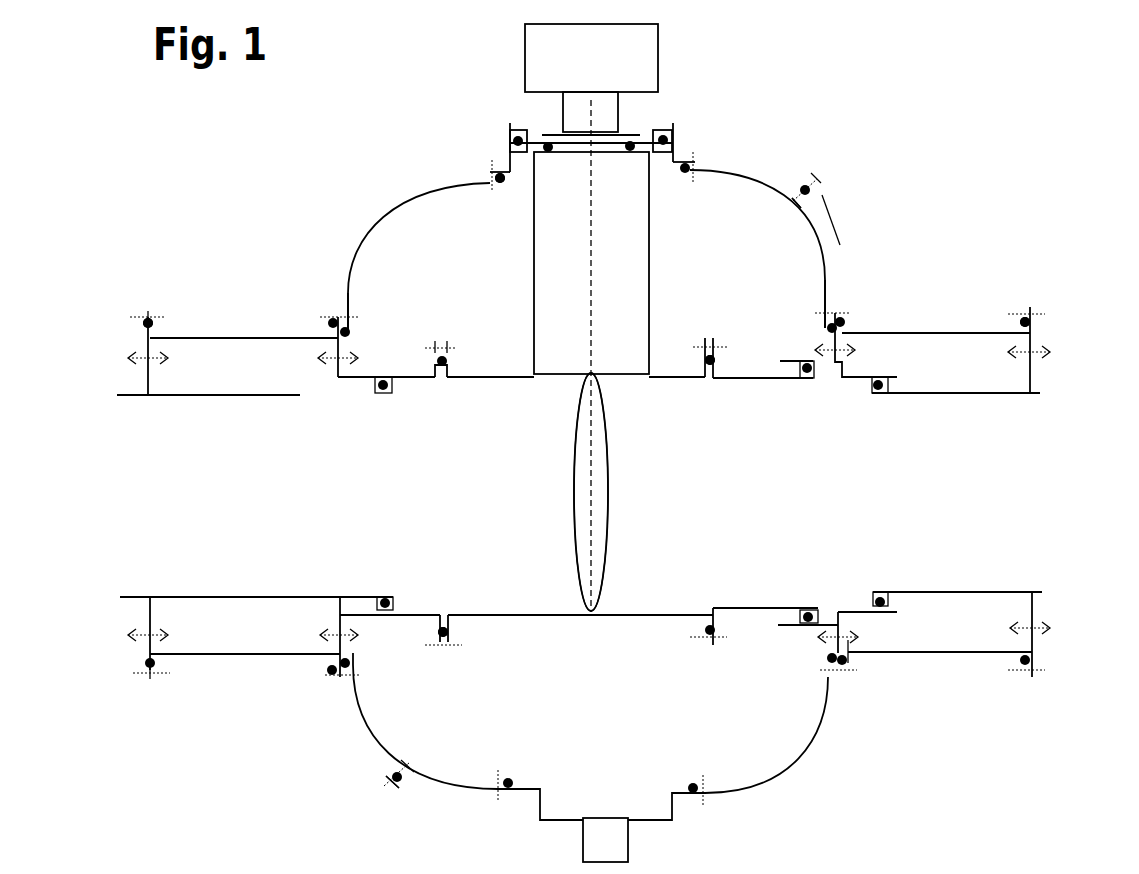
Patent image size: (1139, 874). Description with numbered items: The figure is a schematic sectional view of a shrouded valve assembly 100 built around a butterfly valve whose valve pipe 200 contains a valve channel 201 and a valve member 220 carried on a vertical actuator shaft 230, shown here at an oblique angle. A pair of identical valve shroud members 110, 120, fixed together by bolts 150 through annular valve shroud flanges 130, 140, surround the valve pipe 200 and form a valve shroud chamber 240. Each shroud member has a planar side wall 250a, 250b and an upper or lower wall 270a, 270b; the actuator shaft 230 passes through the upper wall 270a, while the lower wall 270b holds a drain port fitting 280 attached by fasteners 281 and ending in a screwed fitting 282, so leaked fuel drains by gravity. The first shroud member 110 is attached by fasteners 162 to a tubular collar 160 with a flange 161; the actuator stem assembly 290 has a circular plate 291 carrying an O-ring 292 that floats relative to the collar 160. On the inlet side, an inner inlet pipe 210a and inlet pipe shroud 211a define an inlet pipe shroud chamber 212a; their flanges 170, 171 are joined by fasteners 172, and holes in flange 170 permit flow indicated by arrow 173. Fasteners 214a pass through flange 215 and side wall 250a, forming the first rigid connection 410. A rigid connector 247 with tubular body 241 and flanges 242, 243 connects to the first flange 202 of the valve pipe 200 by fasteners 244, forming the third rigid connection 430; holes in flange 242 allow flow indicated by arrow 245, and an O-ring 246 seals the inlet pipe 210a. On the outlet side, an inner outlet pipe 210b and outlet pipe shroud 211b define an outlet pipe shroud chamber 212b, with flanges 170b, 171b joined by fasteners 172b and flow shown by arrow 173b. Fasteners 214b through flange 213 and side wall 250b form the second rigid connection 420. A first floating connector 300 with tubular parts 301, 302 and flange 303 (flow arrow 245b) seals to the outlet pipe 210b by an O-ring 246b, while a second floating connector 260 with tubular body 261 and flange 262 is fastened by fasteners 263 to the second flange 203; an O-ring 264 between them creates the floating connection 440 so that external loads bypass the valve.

The shrouded valve assembly 100 is at (898, 233).
The first valve shroud member 110 is at (378, 232).
The second valve shroud member 120 is at (808, 227).
The valve shroud flange 130 is at (813, 176).
The valve shroud flange 140 is at (822, 183).
The bolt 150 is at (843, 232).
The tubular collar 160 is at (673, 137).
The flange 161 is at (680, 167).
The fastener 162 is at (490, 162).
The flange 170 is at (147, 380).
The flange 170b is at (1032, 375).
The flange 171 is at (155, 333).
The flange 171b is at (1022, 332).
The fastener 172 is at (143, 311).
The fastener 172b is at (1037, 312).
The double-headed arrow 173 is at (140, 350).
The double-headed arrow 173b is at (1037, 630).
The valve pipe 200 is at (578, 496).
The valve channel 201 is at (618, 492).
The first flange 202 is at (452, 648).
The second flange 203 is at (705, 645).
The inner inlet pipe 210a is at (278, 595).
The inner outlet pipe 210b is at (945, 592).
The inlet pipe shroud 211a is at (242, 655).
The outlet pipe shroud 211b is at (930, 652).
The inlet pipe shroud chamber 212a is at (255, 496).
The outlet pipe shroud chamber 212b is at (942, 492).
The flange 213 is at (843, 330).
The fastener 214a is at (347, 315).
The fastener 214b is at (822, 313).
The flange 215 is at (333, 330).
The valve member 220 is at (608, 560).
The actuator shaft 230 is at (592, 323).
The valve shroud chamber 240 is at (549, 454).
The tubular body 241 is at (412, 378).
The flange 242 is at (338, 367).
The flange 243 is at (437, 623).
The fastener 244 is at (433, 647).
The double-headed arrow 245 is at (333, 645).
The double-headed arrow 245b is at (853, 348).
The O-ring 246 is at (386, 598).
The O-ring 246b is at (883, 392).
The rigid connector 247 is at (412, 597).
The planar side wall 250a is at (353, 303).
The planar side wall 250b is at (835, 300).
The second floating connector 260 is at (765, 393).
The tubular body 261 is at (742, 606).
The flange 262 is at (717, 370).
The fastener 263 is at (698, 343).
The O-ring 264 is at (808, 378).
The upper wall 270a is at (500, 190).
The lower wall 270b is at (517, 780).
The drain port fitting 280 is at (677, 813).
The fastener 281 is at (705, 800).
The screwed fitting 282 is at (617, 840).
The actuator stem assembly 290 is at (493, 96).
The circular plate 291 is at (640, 140).
The O-ring 292 is at (510, 142).
The first floating connector 300 is at (847, 385).
The tubular part 301 is at (795, 627).
The tubular part 302 is at (857, 612).
The flange 303 is at (850, 645).
The first rigid connection 410 is at (307, 302).
The second rigid connection 420 is at (878, 680).
The third rigid connection 430 is at (457, 385).
The floating connection 440 is at (797, 592).